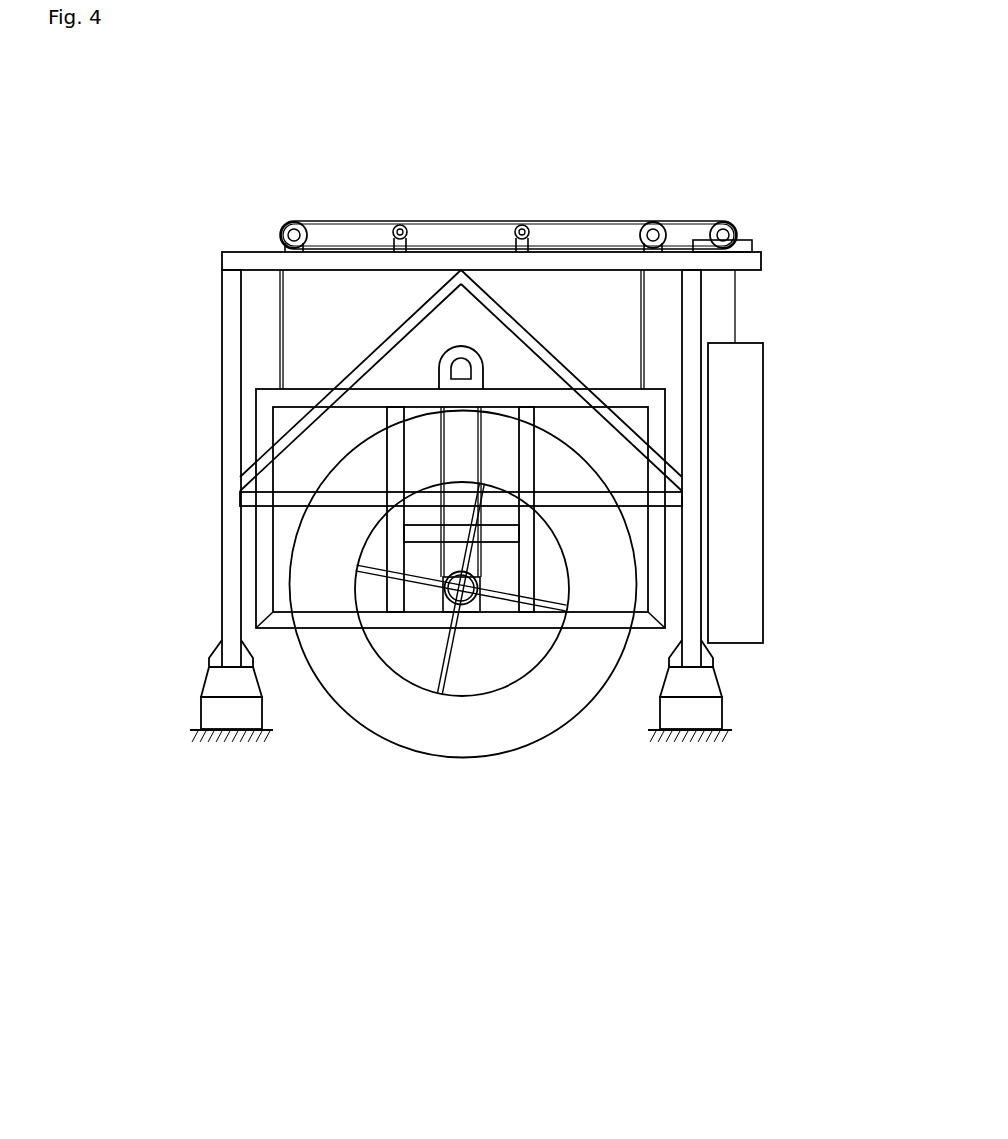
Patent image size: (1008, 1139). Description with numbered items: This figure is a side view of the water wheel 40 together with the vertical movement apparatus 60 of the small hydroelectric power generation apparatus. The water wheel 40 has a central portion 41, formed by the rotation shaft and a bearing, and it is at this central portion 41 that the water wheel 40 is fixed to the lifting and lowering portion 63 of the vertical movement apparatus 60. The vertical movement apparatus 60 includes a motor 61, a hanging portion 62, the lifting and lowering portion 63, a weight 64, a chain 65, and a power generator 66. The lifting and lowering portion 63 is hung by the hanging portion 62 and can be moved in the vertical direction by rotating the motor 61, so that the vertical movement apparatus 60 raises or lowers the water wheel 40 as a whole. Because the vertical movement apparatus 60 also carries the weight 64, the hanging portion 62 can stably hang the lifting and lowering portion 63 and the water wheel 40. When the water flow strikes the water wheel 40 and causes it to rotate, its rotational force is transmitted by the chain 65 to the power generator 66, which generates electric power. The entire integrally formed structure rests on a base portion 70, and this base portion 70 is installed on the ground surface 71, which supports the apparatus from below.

The water wheel 40 is at (461, 762).
The central portion 41 is at (461, 588).
The vertical movement apparatus 60 is at (461, 142).
The motor 61 is at (700, 232).
The hanging portion 62 is at (280, 350).
The lifting and lowering portion 63 is at (543, 387).
The weight 64 is at (763, 395).
The chain 65 is at (440, 562).
The power generator 66 is at (440, 372).
The base portion 70 is at (228, 733).
The ground surface 71 is at (232, 738).